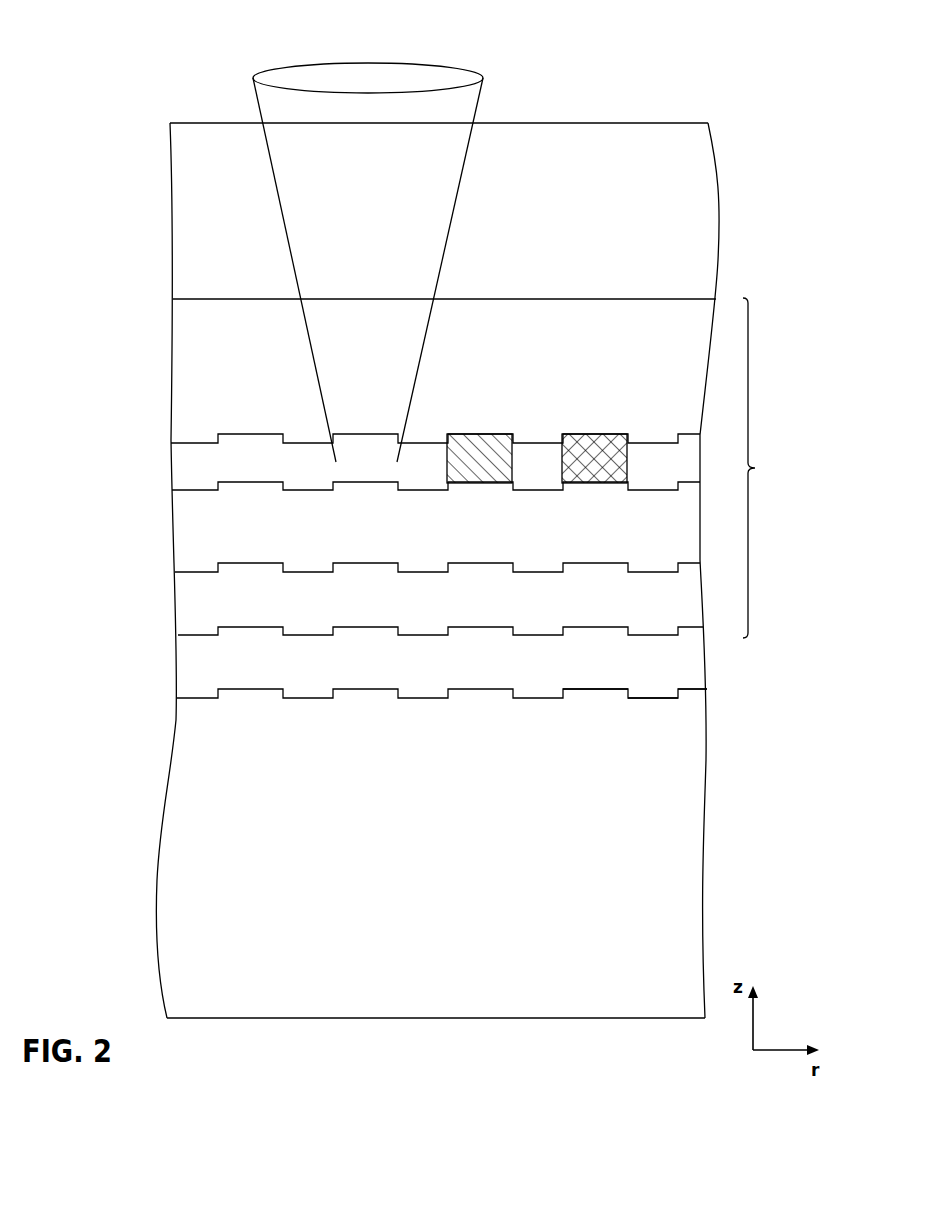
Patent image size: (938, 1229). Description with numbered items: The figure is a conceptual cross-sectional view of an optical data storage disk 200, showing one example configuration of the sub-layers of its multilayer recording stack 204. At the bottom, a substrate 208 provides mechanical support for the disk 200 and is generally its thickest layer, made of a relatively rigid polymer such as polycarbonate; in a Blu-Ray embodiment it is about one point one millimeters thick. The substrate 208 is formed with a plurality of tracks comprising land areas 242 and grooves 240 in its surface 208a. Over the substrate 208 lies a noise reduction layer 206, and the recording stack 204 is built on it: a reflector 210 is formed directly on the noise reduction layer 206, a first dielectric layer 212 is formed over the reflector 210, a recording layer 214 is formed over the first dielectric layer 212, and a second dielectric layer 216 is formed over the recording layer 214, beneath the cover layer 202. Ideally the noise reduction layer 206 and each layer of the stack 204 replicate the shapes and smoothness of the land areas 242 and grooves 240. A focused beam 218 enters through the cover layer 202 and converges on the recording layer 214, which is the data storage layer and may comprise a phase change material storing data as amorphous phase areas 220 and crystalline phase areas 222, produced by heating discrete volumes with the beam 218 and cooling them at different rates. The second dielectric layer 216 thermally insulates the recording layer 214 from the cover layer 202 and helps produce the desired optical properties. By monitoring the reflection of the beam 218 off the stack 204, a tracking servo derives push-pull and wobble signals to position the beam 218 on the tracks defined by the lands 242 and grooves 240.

The optical data storage disk 200 is at (142, 79).
The cover layer 202 is at (193, 194).
The multilayer recording stack 204 is at (769, 468).
The noise reduction layer 206 is at (193, 667).
The substrate 208 is at (191, 848).
The surface 208a is at (690, 694).
The reflector 210 is at (193, 600).
The first dielectric layer 212 is at (193, 532).
The recording layer 214 is at (193, 465).
The second dielectric layer 216 is at (193, 372).
The beam 218 is at (484, 81).
The amorphous phase areas 220 is at (480, 452).
The crystalline phase areas 222 is at (593, 452).
The grooves 240 is at (645, 698).
The land areas 242 is at (613, 690).